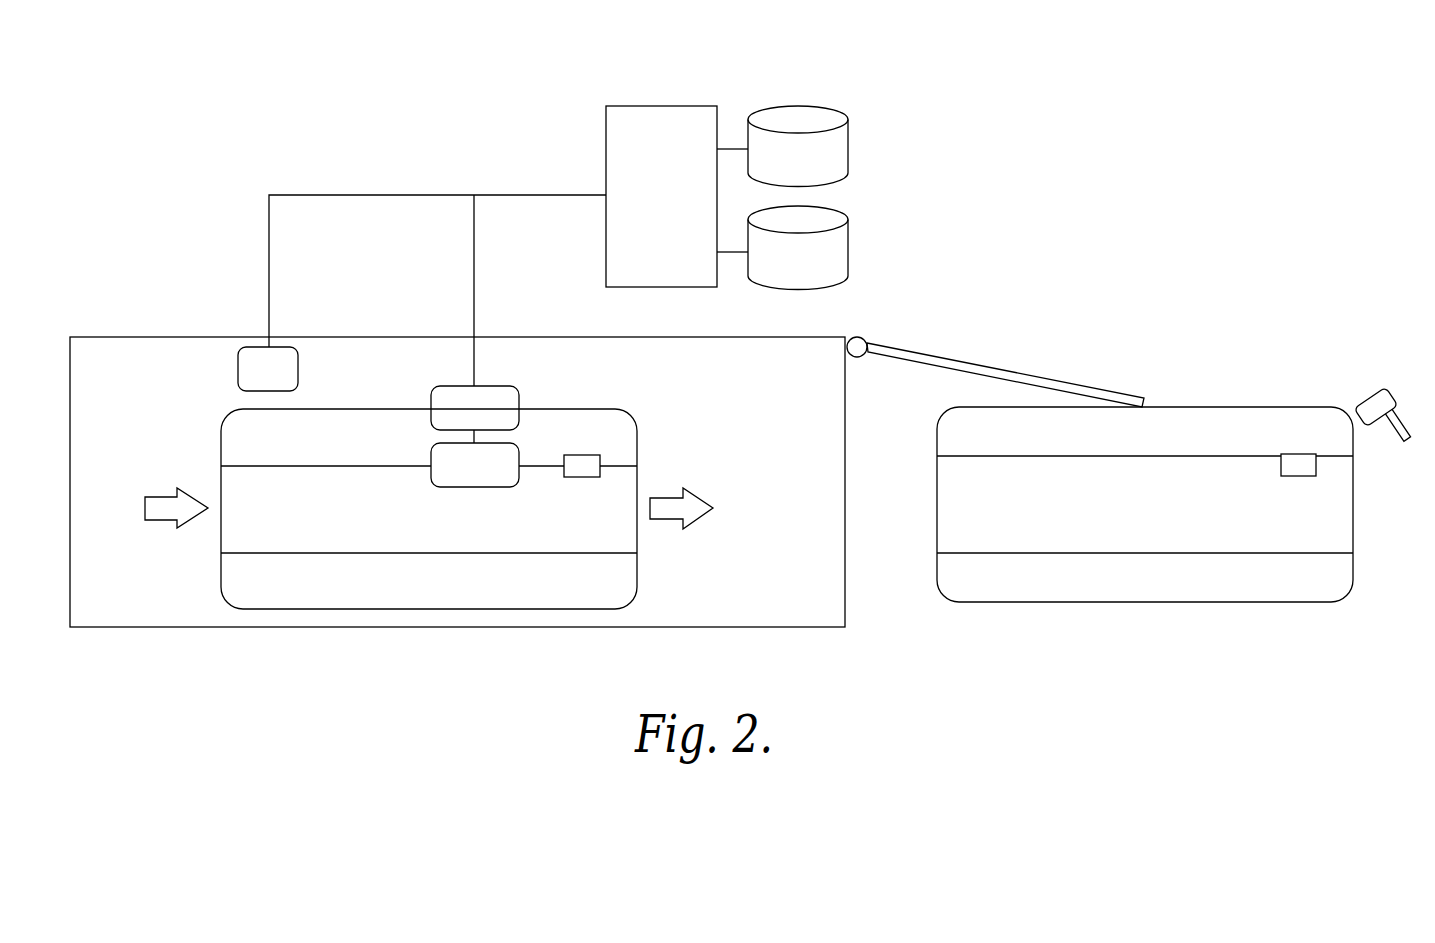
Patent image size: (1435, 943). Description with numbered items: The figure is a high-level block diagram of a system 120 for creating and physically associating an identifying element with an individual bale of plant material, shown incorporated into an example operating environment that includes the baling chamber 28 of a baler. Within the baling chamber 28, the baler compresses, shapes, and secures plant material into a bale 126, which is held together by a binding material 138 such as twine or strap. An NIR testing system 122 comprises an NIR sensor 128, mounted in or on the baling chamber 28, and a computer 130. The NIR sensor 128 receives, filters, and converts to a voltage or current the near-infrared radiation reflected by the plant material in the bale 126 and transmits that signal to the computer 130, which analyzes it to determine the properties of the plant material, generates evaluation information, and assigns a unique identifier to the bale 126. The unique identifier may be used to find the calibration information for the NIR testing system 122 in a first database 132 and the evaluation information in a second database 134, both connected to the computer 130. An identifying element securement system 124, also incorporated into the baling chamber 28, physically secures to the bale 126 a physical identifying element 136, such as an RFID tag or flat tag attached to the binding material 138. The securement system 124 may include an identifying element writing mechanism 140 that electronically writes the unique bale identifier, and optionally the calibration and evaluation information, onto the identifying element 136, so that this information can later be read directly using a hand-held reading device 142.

The baling chamber 28 is at (814, 643).
The system 120 is at (253, 133).
The NIR testing system 122 is at (241, 341).
The identifying element securement system 124 is at (465, 479).
The bale 126 is at (620, 580).
The NIR sensor 128 is at (287, 361).
The computer 130 is at (619, 127).
The first database 132 is at (833, 118).
The second database 134 is at (832, 220).
The physical identifying element 136 is at (589, 470).
The binding material 138 is at (248, 470).
The identifying element writing mechanism 140 is at (500, 400).
The hand-held reading device 142 is at (1360, 386).